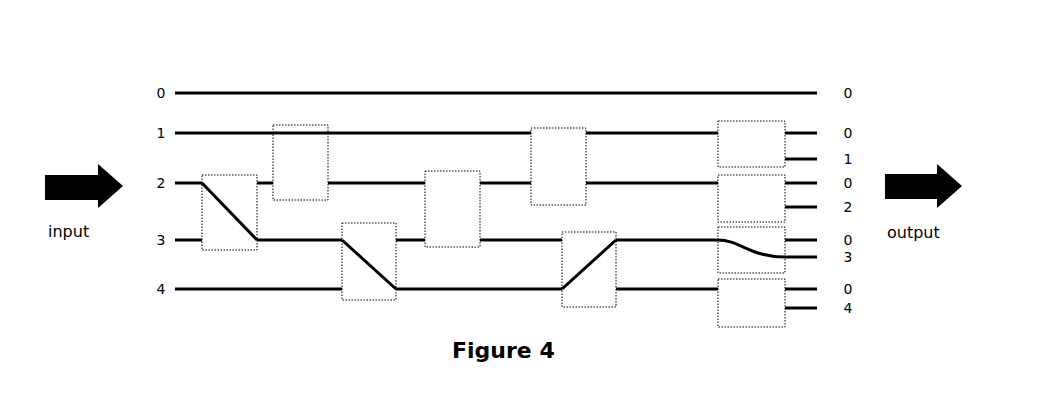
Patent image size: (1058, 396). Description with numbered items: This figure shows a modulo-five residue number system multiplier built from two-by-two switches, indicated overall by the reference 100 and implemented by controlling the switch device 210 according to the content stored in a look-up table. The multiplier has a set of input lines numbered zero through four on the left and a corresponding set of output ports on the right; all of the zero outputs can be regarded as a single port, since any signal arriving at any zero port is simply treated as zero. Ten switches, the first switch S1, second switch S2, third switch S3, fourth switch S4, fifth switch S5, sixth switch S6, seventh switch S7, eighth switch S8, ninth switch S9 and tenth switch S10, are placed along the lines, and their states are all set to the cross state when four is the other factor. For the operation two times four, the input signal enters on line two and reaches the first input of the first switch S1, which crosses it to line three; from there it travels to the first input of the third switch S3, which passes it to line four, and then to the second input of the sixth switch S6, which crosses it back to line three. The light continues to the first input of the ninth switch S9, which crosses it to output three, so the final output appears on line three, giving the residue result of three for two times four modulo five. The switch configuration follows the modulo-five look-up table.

The optical switching network 100 is at (814, 64).
The switch device 210 is at (302, 125).
The first switch S1 is at (229, 212).
The second switch S2 is at (300, 162).
The third switch S3 is at (369, 261).
The fourth switch S4 is at (452, 209).
The fifth switch S5 is at (558, 166).
The sixth switch S6 is at (589, 269).
The seventh switch S7 is at (751, 144).
The eighth switch S8 is at (751, 198).
The ninth switch S9 is at (751, 250).
The tenth switch S10 is at (751, 303).